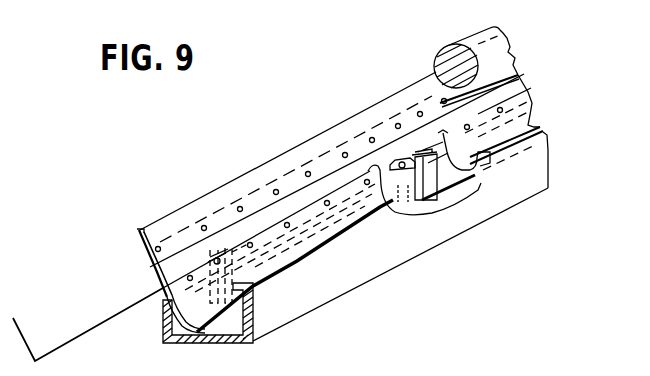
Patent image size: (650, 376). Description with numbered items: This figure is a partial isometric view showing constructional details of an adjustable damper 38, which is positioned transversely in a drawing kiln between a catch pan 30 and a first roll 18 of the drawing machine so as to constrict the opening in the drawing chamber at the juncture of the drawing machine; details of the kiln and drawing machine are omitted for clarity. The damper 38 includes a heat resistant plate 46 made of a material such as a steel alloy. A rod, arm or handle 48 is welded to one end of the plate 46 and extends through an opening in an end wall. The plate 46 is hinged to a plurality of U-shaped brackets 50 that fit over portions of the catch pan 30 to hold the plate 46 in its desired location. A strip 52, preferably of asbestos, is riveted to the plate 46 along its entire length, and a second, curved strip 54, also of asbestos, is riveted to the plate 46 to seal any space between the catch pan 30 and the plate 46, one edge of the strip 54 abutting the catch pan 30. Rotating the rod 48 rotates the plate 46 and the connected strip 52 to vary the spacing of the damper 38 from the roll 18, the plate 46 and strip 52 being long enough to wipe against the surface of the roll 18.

The first roll 18 is at (434, 62).
The catch pan 30 is at (188, 342).
The adjustable damper 38 is at (139, 230).
The heat resistant plate 46 is at (158, 279).
The rod, arm or handle 48 is at (72, 340).
The U-shaped bracket 50 is at (476, 180).
The strip 52 is at (138, 238).
The curved strip 54 is at (187, 314).